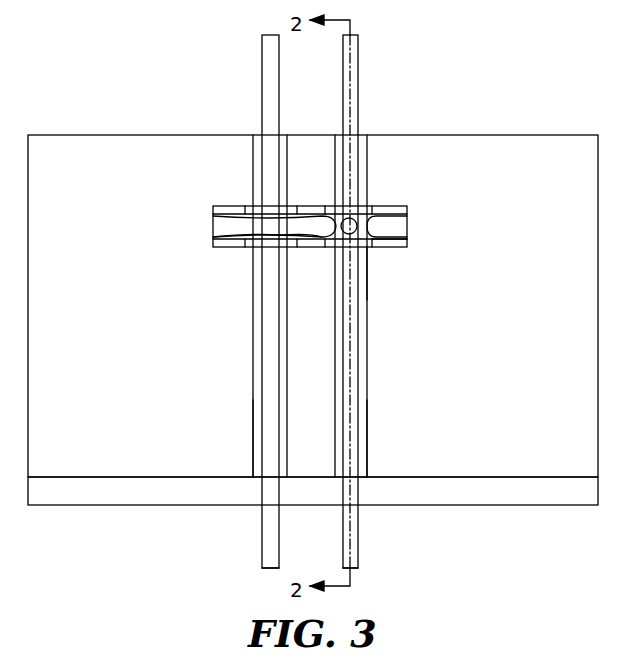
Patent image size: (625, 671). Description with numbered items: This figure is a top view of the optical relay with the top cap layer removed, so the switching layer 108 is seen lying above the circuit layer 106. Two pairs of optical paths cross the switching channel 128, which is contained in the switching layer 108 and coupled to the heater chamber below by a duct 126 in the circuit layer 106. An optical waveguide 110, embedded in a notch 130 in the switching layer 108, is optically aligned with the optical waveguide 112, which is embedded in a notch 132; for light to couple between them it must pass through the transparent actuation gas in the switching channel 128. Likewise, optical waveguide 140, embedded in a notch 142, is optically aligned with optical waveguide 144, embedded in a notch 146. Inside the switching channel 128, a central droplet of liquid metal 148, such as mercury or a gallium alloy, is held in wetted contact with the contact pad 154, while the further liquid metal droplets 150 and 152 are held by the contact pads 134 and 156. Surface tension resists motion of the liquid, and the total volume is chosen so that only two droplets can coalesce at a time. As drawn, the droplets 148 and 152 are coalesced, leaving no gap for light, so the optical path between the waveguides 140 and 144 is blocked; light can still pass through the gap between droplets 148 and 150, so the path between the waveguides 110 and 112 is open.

The circuit layer 106 is at (100, 506).
The switching layer 108 is at (100, 135).
The optical waveguide 110 is at (358, 546).
The optical waveguide 112 is at (358, 60).
The duct 126 is at (356, 220).
The switching channel 128 is at (363, 250).
The notch 130 is at (364, 474).
The notch 132 is at (363, 140).
The contact pad 134 is at (390, 243).
The optical waveguide 140 is at (262, 546).
The notch 142 is at (256, 474).
The optical waveguide 144 is at (262, 60).
The notch 146 is at (256, 140).
The central liquid metal droplet 148 is at (313, 222).
The liquid metal droplet 150 is at (398, 226).
The liquid metal droplet 152 is at (218, 226).
The contact pad 154 is at (310, 245).
The contact pad 156 is at (228, 243).